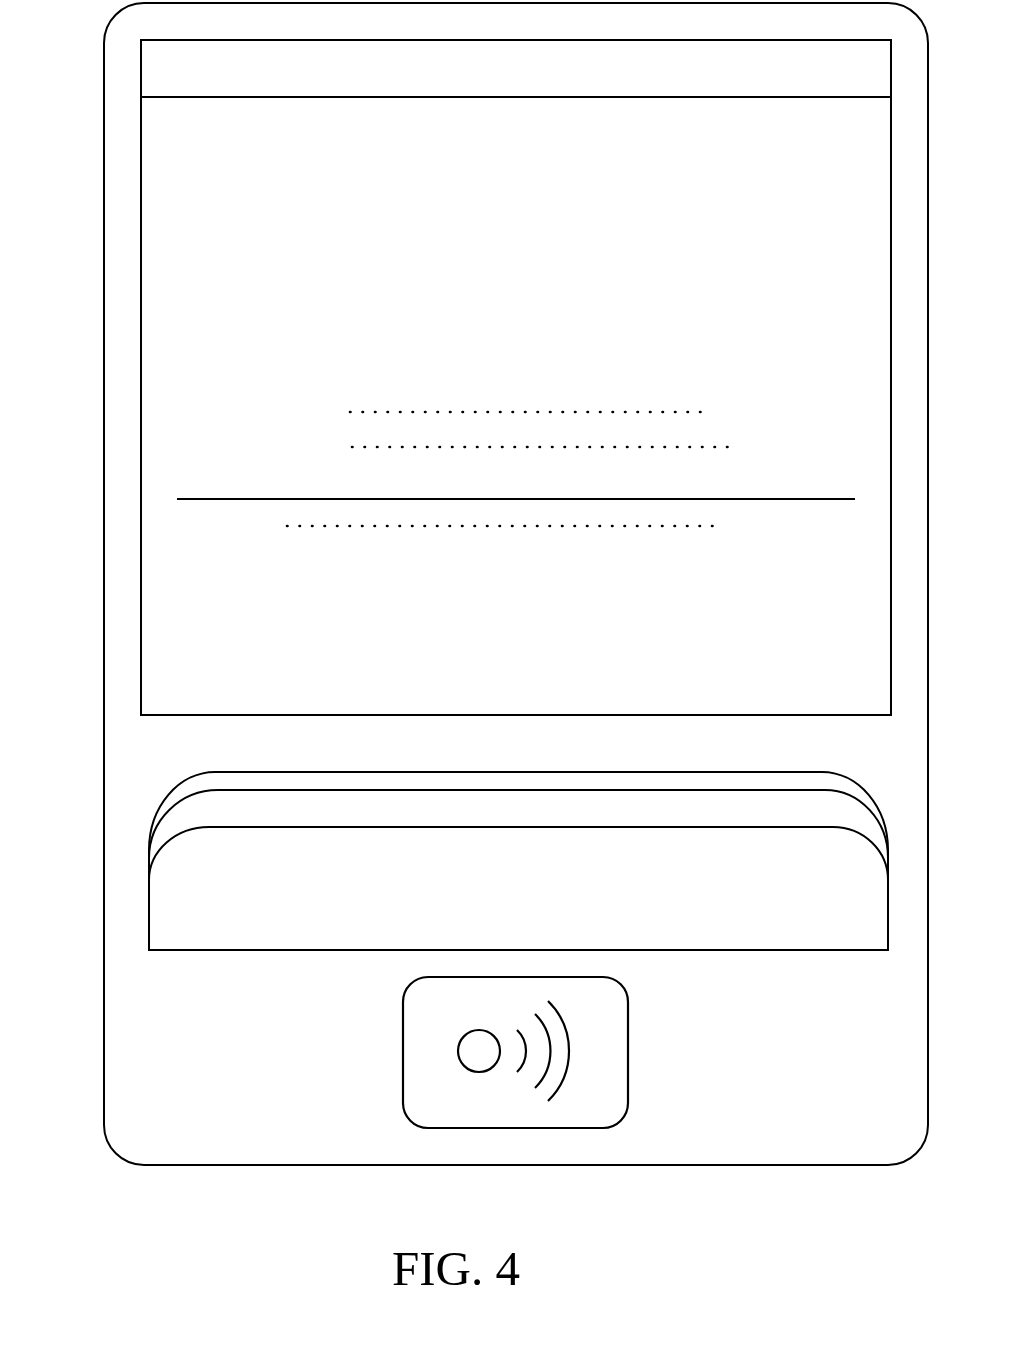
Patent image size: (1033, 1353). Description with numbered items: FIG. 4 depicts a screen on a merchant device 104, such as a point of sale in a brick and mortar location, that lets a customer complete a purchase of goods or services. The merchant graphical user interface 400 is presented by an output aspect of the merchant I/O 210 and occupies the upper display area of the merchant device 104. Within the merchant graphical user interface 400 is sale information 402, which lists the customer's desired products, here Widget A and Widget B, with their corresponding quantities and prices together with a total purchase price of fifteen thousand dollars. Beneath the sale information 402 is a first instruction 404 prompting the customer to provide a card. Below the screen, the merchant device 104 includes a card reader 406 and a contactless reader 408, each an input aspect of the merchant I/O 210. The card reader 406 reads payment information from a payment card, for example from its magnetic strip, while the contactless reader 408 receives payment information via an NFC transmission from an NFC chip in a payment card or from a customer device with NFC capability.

The merchant device 104 is at (118, 61).
The merchant graphical user interface 400 is at (188, 301).
The sale information 402 is at (860, 378).
The first instruction 404 is at (737, 658).
The merchant I/O 210 is at (470, 949).
The card reader 406 is at (871, 848).
The contactless reader 408 is at (628, 1067).